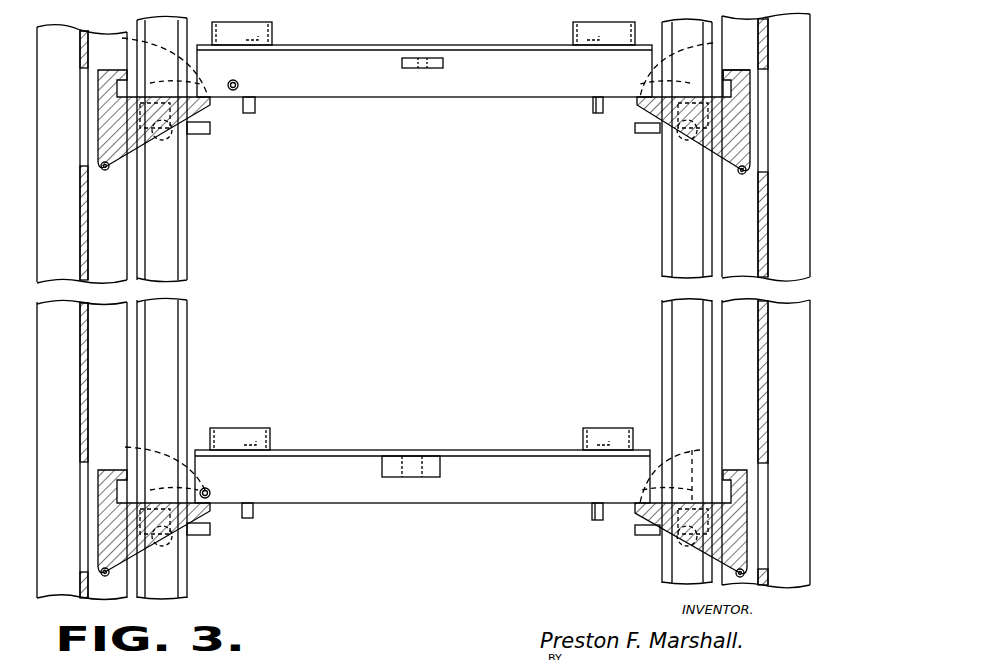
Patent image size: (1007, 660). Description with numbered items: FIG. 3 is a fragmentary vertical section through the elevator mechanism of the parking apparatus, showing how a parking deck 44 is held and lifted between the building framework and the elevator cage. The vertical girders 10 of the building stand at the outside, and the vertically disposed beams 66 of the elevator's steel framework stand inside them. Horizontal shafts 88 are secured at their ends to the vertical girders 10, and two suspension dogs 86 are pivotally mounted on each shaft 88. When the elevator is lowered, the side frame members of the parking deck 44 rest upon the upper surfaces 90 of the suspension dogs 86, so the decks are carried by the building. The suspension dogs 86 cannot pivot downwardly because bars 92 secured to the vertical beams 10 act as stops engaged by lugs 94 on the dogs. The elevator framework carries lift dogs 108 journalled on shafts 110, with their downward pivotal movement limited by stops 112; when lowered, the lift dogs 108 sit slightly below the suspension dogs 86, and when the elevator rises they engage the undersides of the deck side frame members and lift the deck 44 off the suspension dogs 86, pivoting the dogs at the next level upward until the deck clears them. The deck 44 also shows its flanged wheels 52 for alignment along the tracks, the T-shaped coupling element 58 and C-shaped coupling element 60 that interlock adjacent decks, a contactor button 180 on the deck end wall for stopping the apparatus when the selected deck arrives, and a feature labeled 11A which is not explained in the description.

The vertical girder 10 is at (110, 255).
The parking deck 44 is at (527, 88).
The wheel 52 is at (590, 105).
The T-shaped coupling element 58 is at (422, 69).
The C-shaped coupling element 60 is at (397, 478).
The vertically disposed beam 66 is at (157, 350).
The suspension dog 86 is at (205, 110).
The shaft 88 is at (748, 167).
The upper surface 90 is at (650, 95).
The bar 92 is at (723, 70).
The lug 94 is at (748, 80).
The lift dog 108 is at (207, 134).
The shaft 110 is at (650, 573).
The stop 112 is at (686, 468).
The peg 11A is at (637, 115).
The contactor button 180 is at (240, 85).